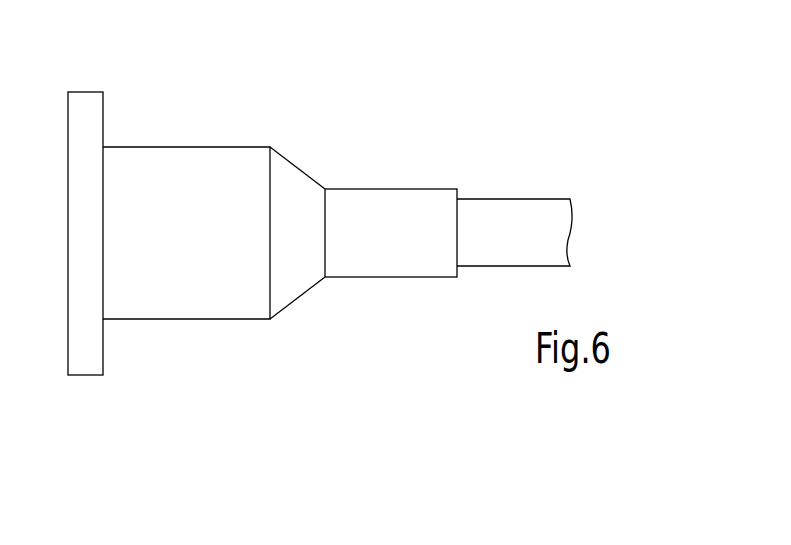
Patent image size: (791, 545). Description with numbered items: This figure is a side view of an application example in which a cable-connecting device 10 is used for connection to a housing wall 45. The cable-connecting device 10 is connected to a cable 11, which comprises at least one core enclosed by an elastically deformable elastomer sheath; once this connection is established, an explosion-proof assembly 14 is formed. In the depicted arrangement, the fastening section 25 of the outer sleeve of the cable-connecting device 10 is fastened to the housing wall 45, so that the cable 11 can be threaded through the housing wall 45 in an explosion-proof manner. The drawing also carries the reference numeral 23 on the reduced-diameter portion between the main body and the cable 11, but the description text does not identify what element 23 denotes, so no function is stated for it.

The explosion-proof assembly 14 is at (505, 85).
The cable-connecting device 10 is at (293, 118).
The fastening section 25 is at (147, 133).
The housing wall 45 is at (84, 350).
The shank portion 23 is at (377, 208).
The cable 11 is at (507, 218).